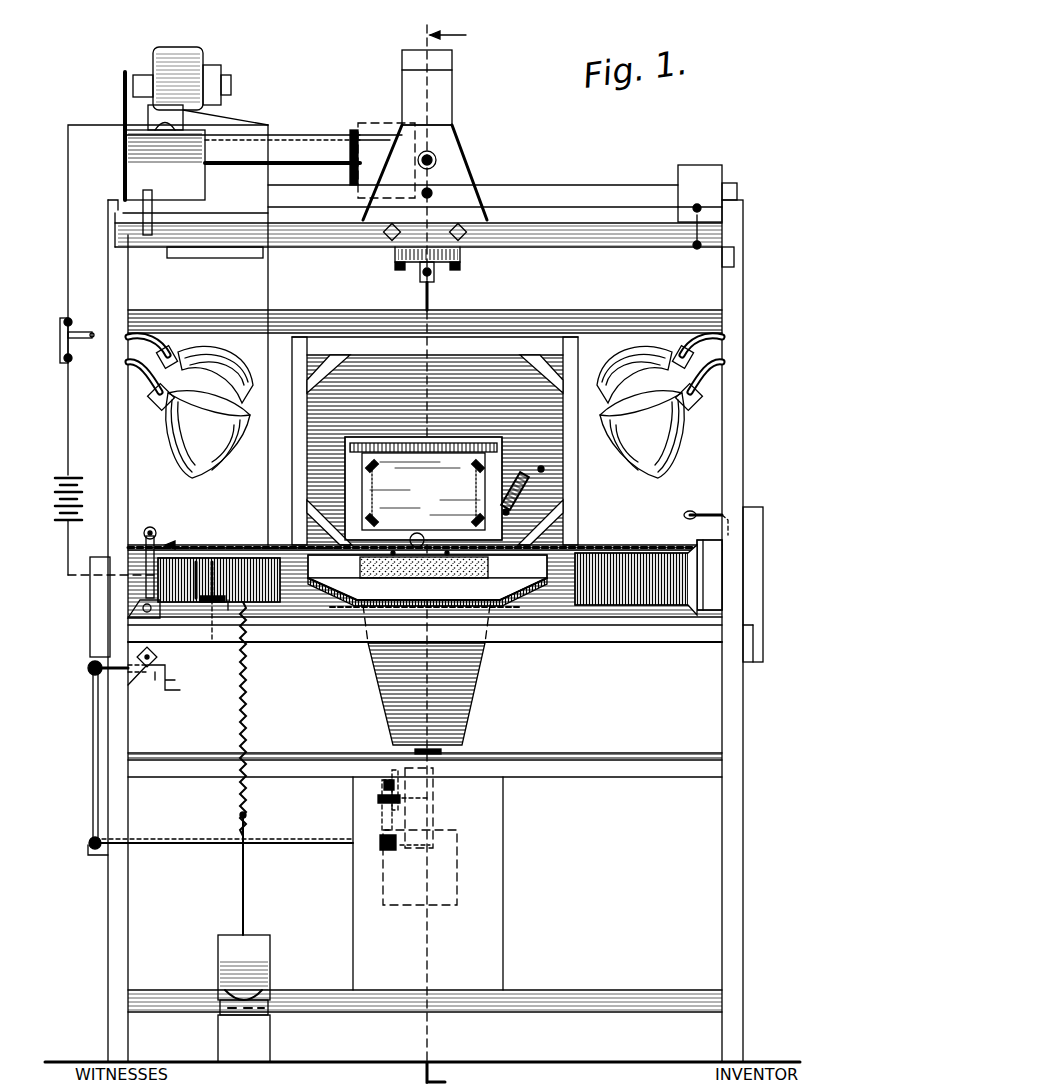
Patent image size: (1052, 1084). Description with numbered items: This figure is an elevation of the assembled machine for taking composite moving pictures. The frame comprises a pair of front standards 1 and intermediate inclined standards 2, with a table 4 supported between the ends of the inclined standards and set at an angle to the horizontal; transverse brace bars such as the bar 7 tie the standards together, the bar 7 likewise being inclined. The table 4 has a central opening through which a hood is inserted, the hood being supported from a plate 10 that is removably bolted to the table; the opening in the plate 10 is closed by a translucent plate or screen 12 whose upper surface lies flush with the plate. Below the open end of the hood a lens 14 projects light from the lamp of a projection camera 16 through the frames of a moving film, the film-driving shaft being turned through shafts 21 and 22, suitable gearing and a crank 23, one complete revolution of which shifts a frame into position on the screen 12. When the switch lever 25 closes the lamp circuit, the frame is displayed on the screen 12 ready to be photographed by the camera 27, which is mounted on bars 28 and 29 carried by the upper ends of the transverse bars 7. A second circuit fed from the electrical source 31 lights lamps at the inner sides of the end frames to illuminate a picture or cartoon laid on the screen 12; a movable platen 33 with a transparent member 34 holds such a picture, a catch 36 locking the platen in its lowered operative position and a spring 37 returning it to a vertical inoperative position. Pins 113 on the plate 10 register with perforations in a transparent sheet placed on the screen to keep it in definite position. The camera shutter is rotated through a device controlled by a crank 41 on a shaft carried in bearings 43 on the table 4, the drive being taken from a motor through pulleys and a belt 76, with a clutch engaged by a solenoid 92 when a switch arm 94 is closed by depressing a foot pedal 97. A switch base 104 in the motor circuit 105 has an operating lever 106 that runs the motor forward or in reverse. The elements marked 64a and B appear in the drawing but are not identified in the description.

The front standards 1 is at (118, 945).
The intermediate inclined standards 2 is at (442, 542).
The table 4 is at (568, 606).
The transverse brace bar 7 is at (115, 255).
The plate 10 is at (338, 590).
The translucent plate or screen 12 is at (392, 575).
The lens 14 is at (245, 730).
The projection camera 16 is at (503, 905).
The shaft 21 is at (203, 846).
The shaft 22 is at (93, 818).
The crank 23 is at (177, 690).
The switch lever 25 is at (693, 510).
The camera 27 is at (462, 160).
The bar 28 is at (568, 242).
The bar 29 is at (572, 198).
The electrical source 31 is at (62, 518).
The movable platen or frame 33 is at (455, 440).
The transparent member 34 is at (423, 500).
The catch 36 is at (522, 570).
The spring 37 is at (542, 485).
The crank 41 is at (160, 585).
The bearings 43 is at (156, 532).
The carriage 64a is at (468, 250).
The belt 76 is at (300, 140).
The solenoid 92 is at (140, 117).
The switch arm 94 is at (212, 640).
The foot pedal 97 is at (268, 948).
The switch base 104 is at (60, 358).
The circuit 105 is at (68, 250).
The operating lever 106 is at (85, 332).
The pins 113 is at (393, 551).
The bearing B is at (158, 658).